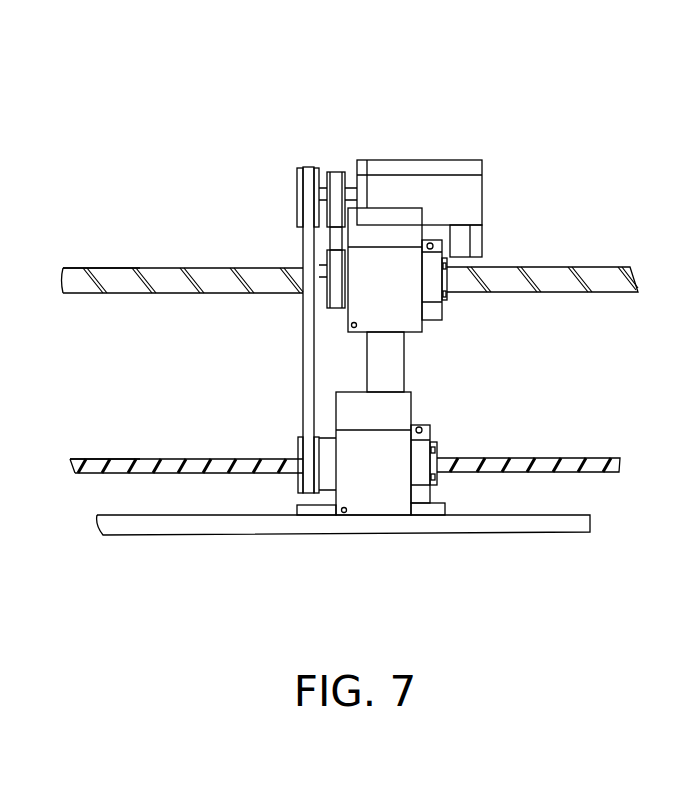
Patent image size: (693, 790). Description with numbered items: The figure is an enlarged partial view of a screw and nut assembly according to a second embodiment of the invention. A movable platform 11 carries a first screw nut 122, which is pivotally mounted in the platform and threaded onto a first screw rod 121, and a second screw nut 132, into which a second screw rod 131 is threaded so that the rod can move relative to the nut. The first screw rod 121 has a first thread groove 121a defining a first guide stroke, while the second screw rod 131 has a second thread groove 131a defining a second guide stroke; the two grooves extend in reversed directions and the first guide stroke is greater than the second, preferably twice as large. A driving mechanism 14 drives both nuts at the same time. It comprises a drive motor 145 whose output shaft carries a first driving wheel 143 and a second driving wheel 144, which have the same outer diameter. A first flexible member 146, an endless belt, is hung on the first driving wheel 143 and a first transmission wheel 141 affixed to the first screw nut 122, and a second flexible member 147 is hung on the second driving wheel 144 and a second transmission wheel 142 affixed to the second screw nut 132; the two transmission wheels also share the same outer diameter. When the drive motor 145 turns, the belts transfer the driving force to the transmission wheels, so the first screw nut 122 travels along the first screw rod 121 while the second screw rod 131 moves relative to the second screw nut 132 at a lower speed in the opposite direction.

The movable platform 11 is at (380, 268).
The driving mechanism 14 is at (434, 145).
The first screw rod 121 is at (607, 277).
The first thread groove 121a is at (140, 268).
The first screw nut 122 is at (443, 278).
The second screw rod 131 is at (543, 463).
The second thread groove 131a is at (137, 459).
The second screw nut 132 is at (435, 465).
The first transmission wheel 141 is at (327, 300).
The second transmission wheel 142 is at (300, 482).
The first driving wheel 143 is at (328, 178).
The second driving wheel 144 is at (297, 175).
The drive motor 145 is at (482, 197).
The first flexible member 146 is at (328, 240).
The second flexible member 147 is at (303, 238).